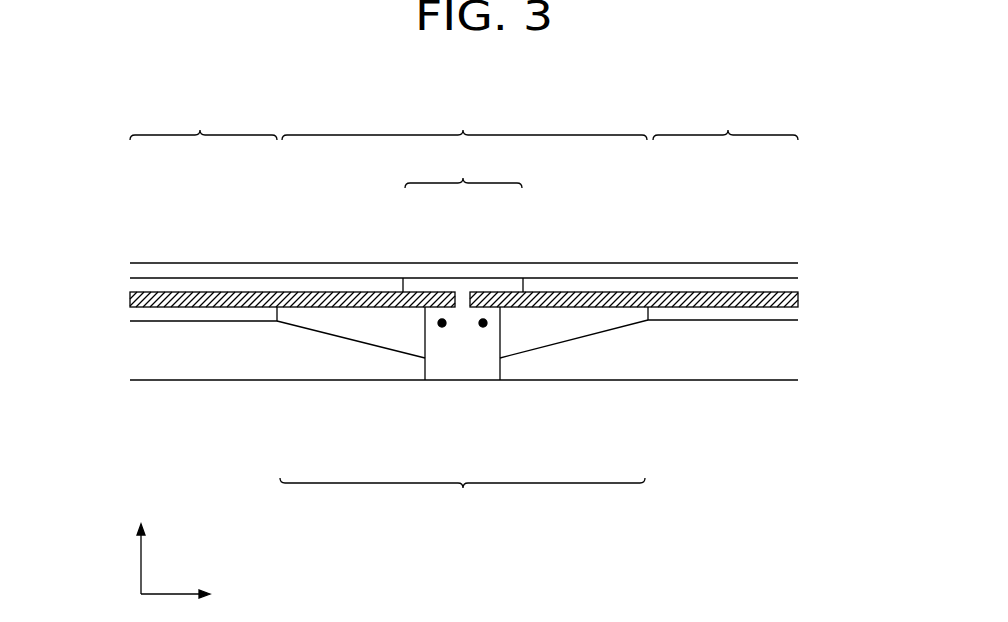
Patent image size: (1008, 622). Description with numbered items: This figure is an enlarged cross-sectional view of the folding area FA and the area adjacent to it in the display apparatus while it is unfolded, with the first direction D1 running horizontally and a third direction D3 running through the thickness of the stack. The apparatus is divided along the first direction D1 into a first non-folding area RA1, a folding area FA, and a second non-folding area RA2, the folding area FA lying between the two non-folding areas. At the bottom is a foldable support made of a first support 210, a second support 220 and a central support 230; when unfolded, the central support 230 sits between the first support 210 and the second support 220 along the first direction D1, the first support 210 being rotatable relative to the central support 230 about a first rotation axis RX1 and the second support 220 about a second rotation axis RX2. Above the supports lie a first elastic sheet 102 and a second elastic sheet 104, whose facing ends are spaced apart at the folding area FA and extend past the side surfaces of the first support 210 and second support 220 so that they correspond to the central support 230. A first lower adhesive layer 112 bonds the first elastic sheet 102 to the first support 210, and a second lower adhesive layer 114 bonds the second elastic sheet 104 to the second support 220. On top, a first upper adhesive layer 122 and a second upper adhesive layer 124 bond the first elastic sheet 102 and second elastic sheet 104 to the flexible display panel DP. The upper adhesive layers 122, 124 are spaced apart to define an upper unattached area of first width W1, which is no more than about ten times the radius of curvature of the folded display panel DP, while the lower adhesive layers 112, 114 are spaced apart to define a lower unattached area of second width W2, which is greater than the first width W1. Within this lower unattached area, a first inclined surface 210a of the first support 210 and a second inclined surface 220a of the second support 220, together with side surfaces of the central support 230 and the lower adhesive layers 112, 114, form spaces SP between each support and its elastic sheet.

The first elastic sheet 102 is at (130, 298).
The second elastic sheet 104 is at (793, 302).
The first lower adhesive layer 112 is at (221, 293).
The second lower adhesive layer 114 is at (723, 293).
The first upper adhesive layer 122 is at (168, 288).
The second upper adhesive layer 124 is at (668, 287).
The first support 210 is at (464, 377).
The first inclined surface 210a is at (335, 337).
The second support 220 is at (688, 377).
The second inclined surface 220a is at (587, 339).
The central support 230 is at (462, 372).
The display panel DP is at (497, 245).
The space SP is at (551, 321).
The first rotation axis RX1 is at (442, 328).
The second rotation axis RX2 is at (483, 328).
The first width W1 is at (463, 168).
The second width W2 is at (462, 498).
The folding area FA is at (464, 122).
The first non-folding area RA1 is at (203, 122).
The second non-folding area RA2 is at (725, 121).
The first direction D1 is at (190, 592).
The third direction D3 is at (141, 544).